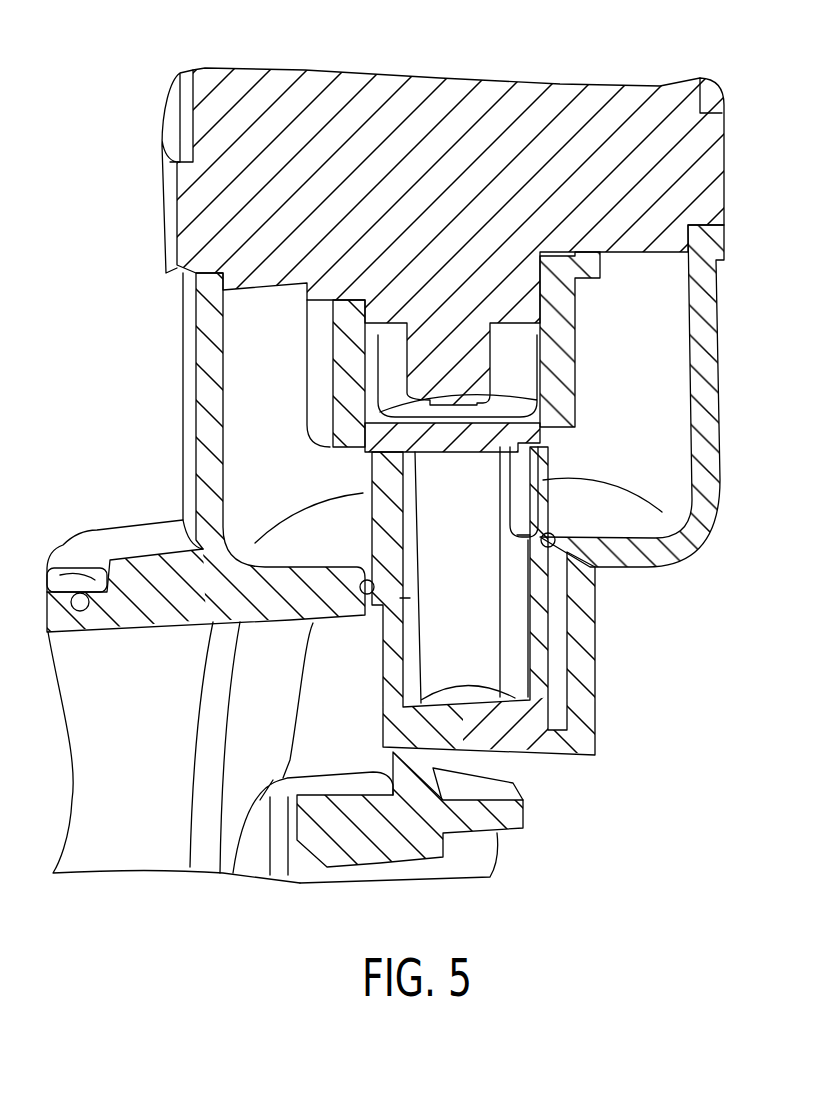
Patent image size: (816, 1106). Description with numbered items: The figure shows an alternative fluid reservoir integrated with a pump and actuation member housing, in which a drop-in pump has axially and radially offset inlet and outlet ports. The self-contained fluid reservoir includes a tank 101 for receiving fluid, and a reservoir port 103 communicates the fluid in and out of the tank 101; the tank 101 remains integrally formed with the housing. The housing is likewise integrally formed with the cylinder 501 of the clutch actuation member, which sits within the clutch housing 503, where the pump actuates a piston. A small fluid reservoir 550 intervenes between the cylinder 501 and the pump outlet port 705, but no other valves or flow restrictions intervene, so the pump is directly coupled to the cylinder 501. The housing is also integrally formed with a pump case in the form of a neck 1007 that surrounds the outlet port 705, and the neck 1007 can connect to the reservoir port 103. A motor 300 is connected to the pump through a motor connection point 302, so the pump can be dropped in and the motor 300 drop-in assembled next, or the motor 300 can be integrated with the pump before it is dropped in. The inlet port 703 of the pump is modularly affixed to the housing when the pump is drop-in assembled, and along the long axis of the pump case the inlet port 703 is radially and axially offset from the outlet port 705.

The motor 300 is at (485, 98).
The motor connection point 302 is at (579, 335).
The tank 101 is at (224, 405).
The reservoir port 103 is at (570, 552).
The inlet port 703 is at (533, 547).
The outlet port 705 is at (395, 702).
The neck 1007 is at (592, 660).
The cylinder 501 is at (140, 623).
The small fluid reservoir 550 is at (317, 622).
The clutch housing 503 is at (522, 810).